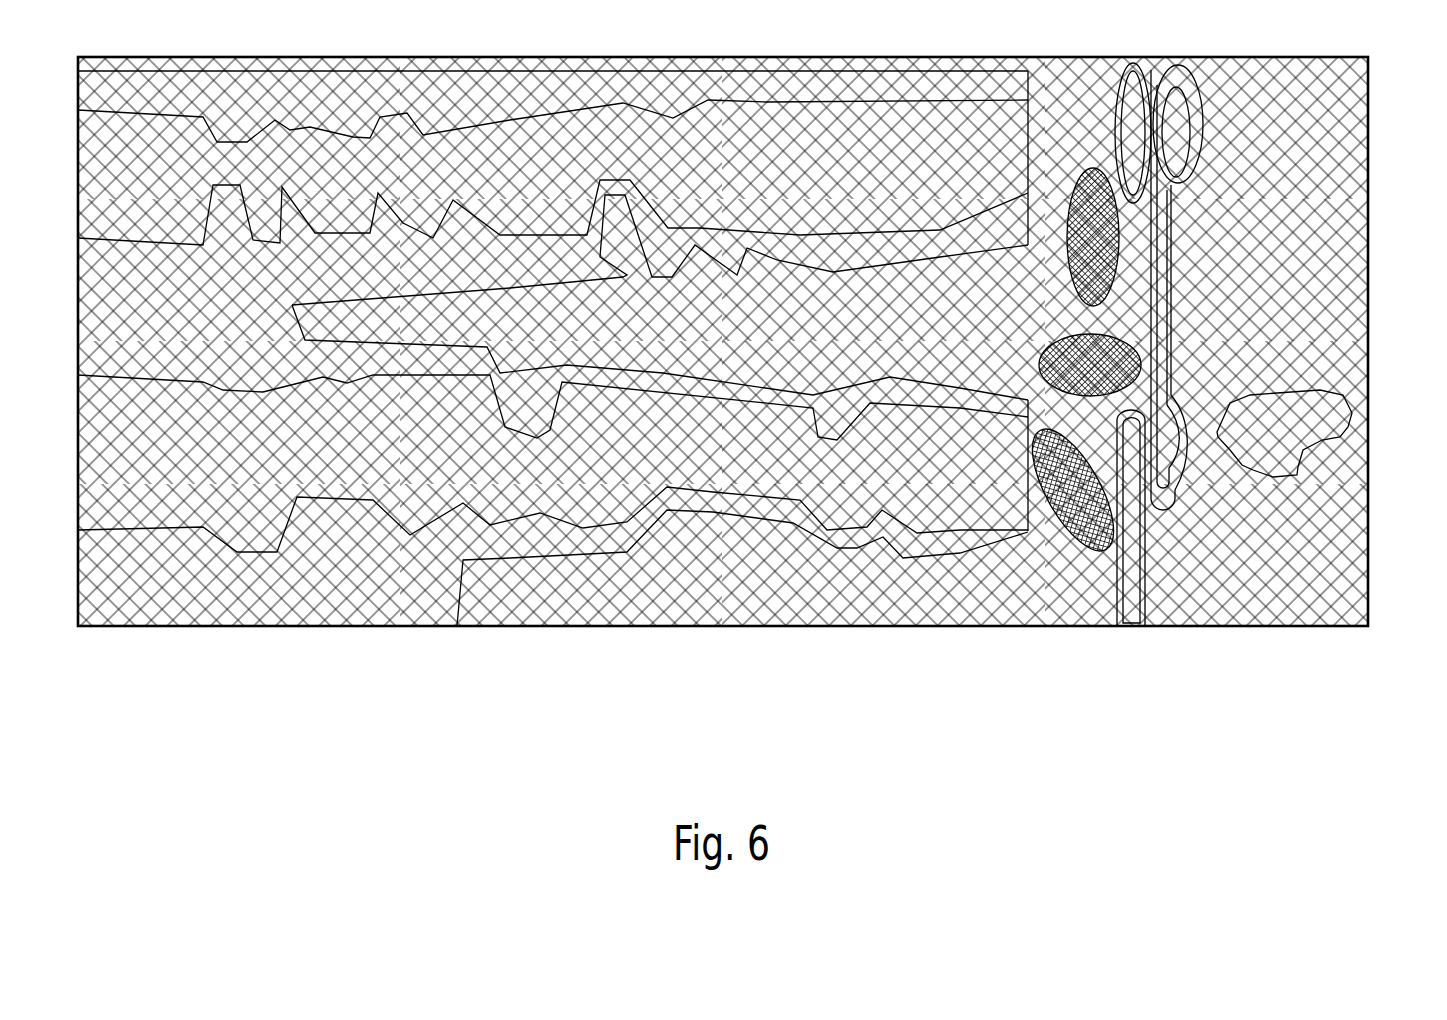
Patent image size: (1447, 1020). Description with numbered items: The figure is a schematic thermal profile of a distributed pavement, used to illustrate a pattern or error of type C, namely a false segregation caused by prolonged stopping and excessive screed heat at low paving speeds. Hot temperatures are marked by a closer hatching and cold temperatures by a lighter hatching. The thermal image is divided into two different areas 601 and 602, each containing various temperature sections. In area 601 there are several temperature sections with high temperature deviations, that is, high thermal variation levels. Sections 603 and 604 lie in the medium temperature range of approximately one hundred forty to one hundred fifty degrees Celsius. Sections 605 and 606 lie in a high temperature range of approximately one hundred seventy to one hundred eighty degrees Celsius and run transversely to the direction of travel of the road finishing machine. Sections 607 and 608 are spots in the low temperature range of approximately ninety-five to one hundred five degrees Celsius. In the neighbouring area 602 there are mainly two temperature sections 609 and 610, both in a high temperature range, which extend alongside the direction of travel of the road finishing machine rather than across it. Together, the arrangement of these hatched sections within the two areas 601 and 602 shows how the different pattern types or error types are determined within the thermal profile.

The area 601 is at (1368, 705).
The area 602 is at (1035, 705).
The section 603 is at (1312, 560).
The section 604 is at (1310, 437).
The section 605 is at (1173, 512).
The section 606 is at (1132, 83).
The section 607 is at (1093, 168).
The section 608 is at (1060, 537).
The temperature section 609 is at (725, 140).
The temperature section 610 is at (375, 483).